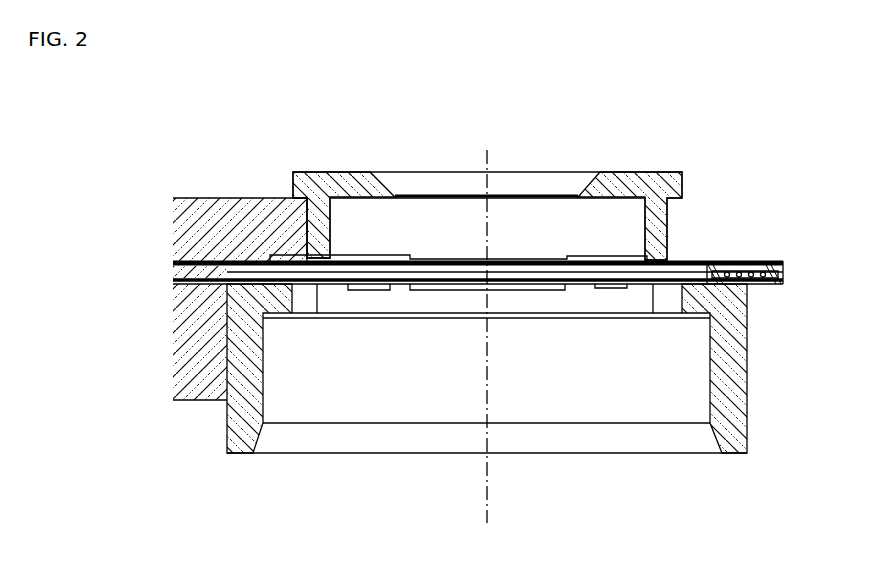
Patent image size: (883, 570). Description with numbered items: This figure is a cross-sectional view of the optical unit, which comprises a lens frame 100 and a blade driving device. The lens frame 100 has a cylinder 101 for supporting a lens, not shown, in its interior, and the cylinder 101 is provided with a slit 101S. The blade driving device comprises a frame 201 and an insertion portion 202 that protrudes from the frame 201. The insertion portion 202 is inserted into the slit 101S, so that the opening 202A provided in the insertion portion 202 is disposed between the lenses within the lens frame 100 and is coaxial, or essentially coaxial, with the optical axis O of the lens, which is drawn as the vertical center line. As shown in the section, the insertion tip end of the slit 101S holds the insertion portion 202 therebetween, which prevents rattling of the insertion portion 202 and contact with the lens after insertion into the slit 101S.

The lens frame 100 is at (670, 172).
The cylinder 101 is at (749, 378).
The slit 101S is at (316, 268).
The frame 201 is at (195, 198).
The insertion portion 202 is at (786, 265).
The opening 202A is at (564, 256).
The optical axis O is at (487, 517).